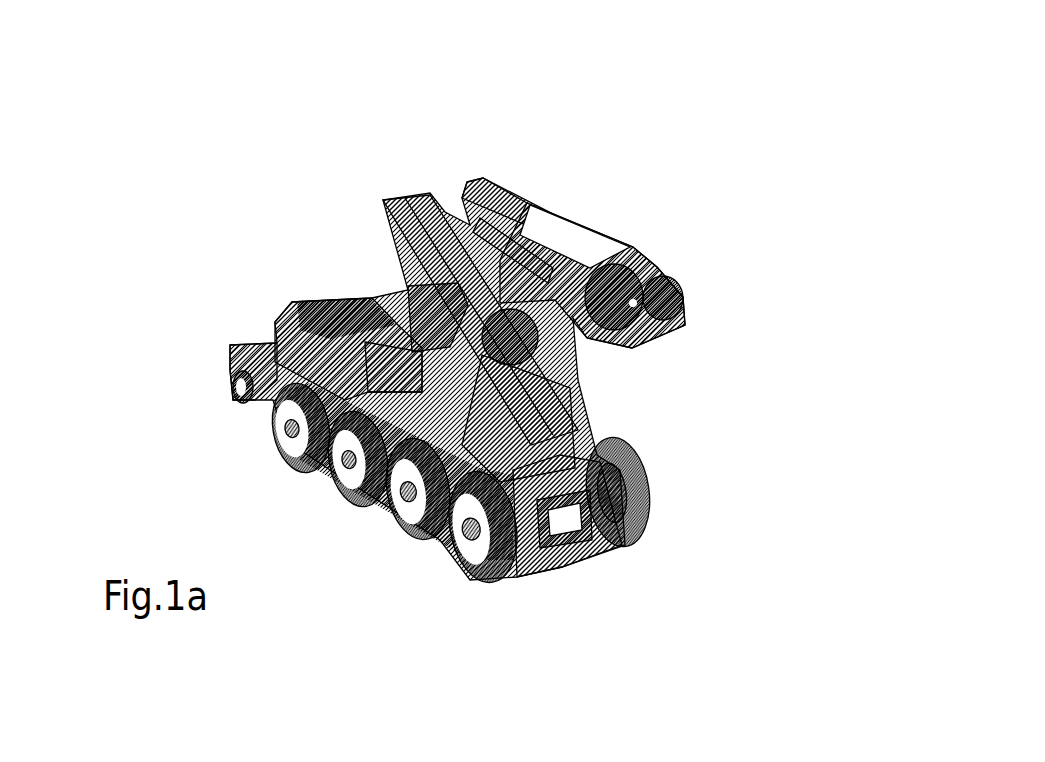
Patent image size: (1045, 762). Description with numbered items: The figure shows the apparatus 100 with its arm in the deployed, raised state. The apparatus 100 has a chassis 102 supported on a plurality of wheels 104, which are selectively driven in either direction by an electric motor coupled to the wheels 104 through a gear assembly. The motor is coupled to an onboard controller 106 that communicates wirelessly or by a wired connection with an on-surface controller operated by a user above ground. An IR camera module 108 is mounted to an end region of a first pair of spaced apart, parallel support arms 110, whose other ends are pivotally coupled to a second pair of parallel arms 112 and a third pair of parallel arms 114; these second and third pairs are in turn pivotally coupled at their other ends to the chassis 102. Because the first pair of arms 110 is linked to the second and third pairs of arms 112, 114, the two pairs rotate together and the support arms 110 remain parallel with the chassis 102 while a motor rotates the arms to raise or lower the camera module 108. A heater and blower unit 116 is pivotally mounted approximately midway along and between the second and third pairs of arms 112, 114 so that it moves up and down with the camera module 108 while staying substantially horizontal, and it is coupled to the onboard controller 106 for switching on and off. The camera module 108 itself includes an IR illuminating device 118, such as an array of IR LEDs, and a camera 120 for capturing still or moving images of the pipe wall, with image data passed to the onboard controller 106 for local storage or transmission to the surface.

The apparatus 100 is at (427, 168).
The chassis 102 is at (573, 547).
The wheels 104 is at (647, 487).
The onboard controller 106 is at (280, 321).
The IR camera module 108 is at (660, 245).
The first pair of support arms 110 is at (548, 214).
The second pair of arms 112 is at (567, 383).
The third pair of arms 114 is at (407, 253).
The heater and blower unit 116 is at (407, 298).
The IR illuminating device 118 is at (676, 275).
The camera 120 is at (667, 318).